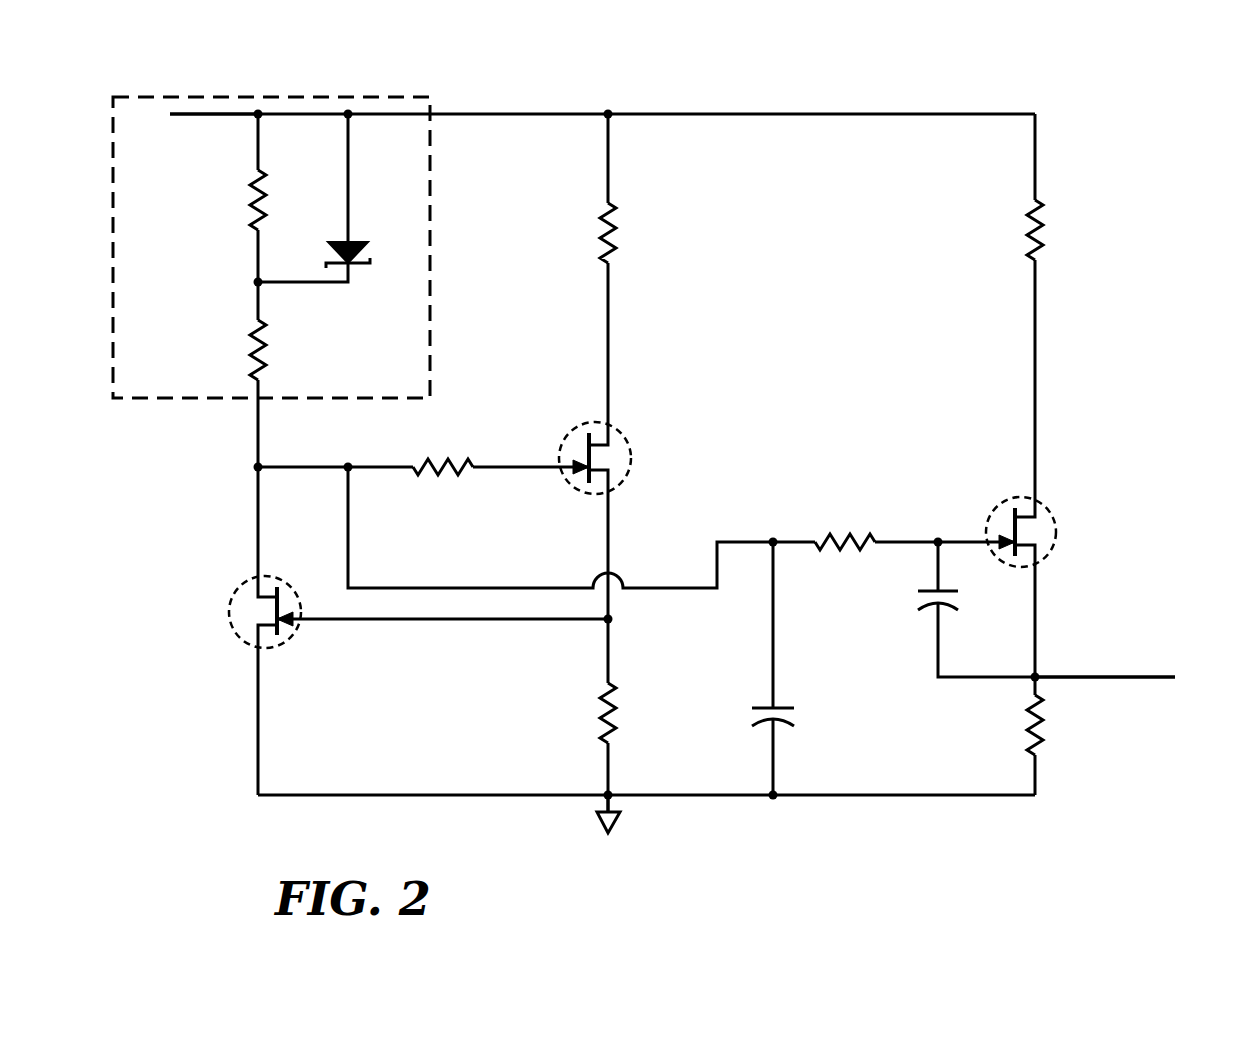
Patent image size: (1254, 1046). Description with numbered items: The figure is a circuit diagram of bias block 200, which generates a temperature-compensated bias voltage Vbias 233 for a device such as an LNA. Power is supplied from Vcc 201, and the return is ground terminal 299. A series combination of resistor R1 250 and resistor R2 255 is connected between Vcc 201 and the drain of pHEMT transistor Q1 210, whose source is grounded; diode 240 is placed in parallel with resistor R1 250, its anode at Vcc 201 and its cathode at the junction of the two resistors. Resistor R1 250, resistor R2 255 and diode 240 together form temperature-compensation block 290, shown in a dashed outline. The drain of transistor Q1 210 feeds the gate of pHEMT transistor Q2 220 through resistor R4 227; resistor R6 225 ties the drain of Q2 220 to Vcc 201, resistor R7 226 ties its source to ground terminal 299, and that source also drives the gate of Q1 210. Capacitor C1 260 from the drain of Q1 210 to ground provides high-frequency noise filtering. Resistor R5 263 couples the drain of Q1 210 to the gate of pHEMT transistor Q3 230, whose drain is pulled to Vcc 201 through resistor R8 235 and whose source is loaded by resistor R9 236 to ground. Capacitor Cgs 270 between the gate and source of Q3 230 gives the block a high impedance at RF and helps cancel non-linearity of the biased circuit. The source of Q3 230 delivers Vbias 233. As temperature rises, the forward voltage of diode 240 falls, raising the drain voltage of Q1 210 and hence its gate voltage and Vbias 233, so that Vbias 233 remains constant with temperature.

The bias block 200 is at (472, 46).
The Vcc 201 is at (205, 114).
The pHEMT transistor Q1 210 is at (232, 620).
The pHEMT transistor Q2 220 is at (628, 436).
The resistor R6 225 is at (618, 228).
The resistor R7 226 is at (618, 702).
The resistor R4 227 is at (446, 460).
The pHEMT transistor Q3 230 is at (1055, 516).
The bias voltage Vbias 233 is at (1155, 676).
The resistor R8 235 is at (1046, 230).
The resistor R9 236 is at (1045, 732).
The diode 240 is at (356, 244).
The resistor R1 250 is at (250, 204).
The resistor R2 255 is at (250, 347).
The capacitor C1 260 is at (788, 710).
The resistor R5 263 is at (848, 528).
The capacitor Cgs 270 is at (932, 608).
The temperature-compensation block 290 is at (271, 247).
The ground terminal 299 is at (610, 833).